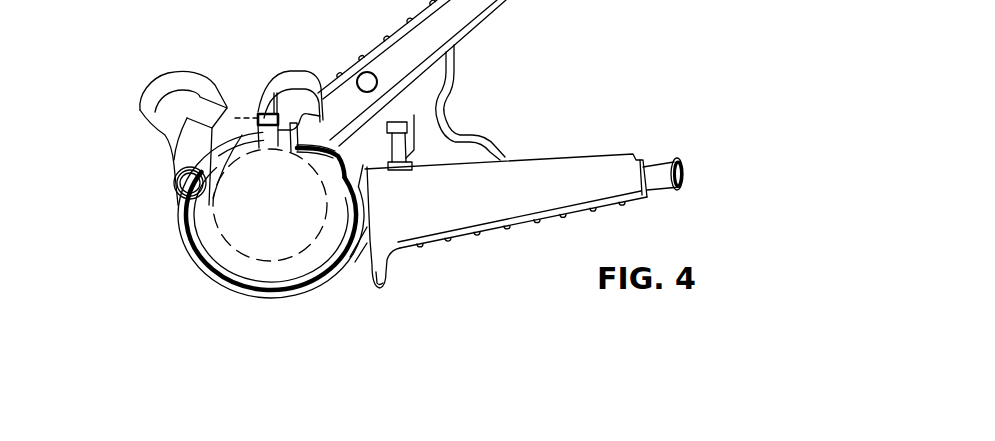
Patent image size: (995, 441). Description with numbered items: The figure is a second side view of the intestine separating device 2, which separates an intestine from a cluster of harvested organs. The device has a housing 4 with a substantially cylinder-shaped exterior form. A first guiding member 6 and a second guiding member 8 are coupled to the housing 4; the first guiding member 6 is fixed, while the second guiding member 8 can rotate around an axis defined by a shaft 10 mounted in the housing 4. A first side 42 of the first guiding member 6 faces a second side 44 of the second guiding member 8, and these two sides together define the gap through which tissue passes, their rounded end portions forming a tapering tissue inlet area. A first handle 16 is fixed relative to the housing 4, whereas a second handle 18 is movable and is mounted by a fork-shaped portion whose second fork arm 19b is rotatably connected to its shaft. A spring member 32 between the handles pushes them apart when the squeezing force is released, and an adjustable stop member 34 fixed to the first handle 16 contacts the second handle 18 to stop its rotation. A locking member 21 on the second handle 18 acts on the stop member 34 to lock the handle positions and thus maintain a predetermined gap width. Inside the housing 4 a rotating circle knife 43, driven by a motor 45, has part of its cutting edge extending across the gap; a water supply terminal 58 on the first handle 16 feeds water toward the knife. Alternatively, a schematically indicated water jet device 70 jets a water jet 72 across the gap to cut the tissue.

The intestine separating device 2 is at (68, 135).
The housing 4 is at (213, 253).
The first guiding member 6 is at (310, 71).
The second guiding member 8 is at (152, 88).
The shaft 10 is at (180, 184).
The first handle 16 is at (500, 212).
The second handle 18 is at (475, 10).
The second fork arm 19b is at (323, 130).
The locking member 21 is at (368, 70).
The spring member 32 is at (480, 138).
The adjustable stop member 34 is at (407, 129).
The first side 42 is at (252, 99).
The circle knife 43 is at (213, 198).
The second side 44 is at (214, 92).
The motor 45 is at (307, 247).
The water supply terminal 58 is at (657, 167).
The water jet device 70 is at (276, 112).
The water jet 72 is at (246, 120).